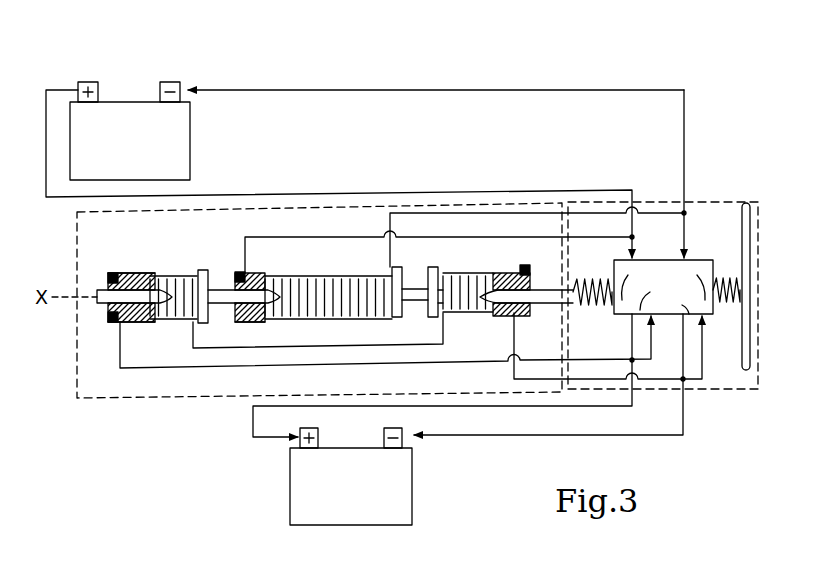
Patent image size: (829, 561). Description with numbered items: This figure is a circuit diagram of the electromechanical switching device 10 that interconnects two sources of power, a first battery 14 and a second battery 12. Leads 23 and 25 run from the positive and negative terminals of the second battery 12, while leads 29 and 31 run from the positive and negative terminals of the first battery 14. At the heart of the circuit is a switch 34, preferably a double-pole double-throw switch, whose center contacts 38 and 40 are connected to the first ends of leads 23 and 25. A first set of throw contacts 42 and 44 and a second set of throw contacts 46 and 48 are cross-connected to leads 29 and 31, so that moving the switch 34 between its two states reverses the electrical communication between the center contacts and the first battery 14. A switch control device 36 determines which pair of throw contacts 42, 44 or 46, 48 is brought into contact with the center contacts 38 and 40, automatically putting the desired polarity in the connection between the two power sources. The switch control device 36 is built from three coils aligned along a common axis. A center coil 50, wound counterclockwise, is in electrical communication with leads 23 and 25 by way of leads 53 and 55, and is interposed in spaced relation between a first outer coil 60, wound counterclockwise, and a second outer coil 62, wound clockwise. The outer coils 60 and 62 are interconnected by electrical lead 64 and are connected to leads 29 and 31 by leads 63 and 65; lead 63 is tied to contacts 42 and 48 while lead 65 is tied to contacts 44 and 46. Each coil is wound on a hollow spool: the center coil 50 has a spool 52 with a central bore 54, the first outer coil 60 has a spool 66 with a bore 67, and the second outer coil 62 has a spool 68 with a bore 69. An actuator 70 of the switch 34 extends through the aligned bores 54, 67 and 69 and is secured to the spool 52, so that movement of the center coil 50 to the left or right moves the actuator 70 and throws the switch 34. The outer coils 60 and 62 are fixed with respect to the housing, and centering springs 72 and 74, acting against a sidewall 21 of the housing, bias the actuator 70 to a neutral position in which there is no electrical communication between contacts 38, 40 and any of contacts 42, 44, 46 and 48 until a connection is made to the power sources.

The electromechanical switching device 10 is at (588, 70).
The second battery 12 is at (175, 141).
The first battery 14 is at (400, 489).
The sidewall 21 is at (750, 334).
The lead 23 is at (290, 190).
The lead 25 is at (342, 91).
The lead 29 is at (443, 407).
The lead 31 is at (581, 363).
The switch 34 is at (700, 205).
The switch control device 36 is at (87, 233).
The center contact 38 is at (640, 258).
The center contact 40 is at (692, 258).
The throw contact 42 is at (638, 283).
The throw contact 44 is at (674, 305).
The throw contact 46 is at (690, 283).
The throw contact 48 is at (658, 295).
The center coil 50 is at (313, 273).
The spool 52 is at (224, 267).
The lead 53 is at (290, 237).
The central bore 54 is at (230, 287).
The lead 55 is at (388, 250).
The first outer coil 60 is at (106, 277).
The second outer coil 62 is at (455, 272).
The lead 63 is at (170, 370).
The electrical lead 64 is at (278, 345).
The lead 65 is at (510, 332).
The spool 66 is at (120, 273).
The bore 67 is at (108, 310).
The spool 68 is at (440, 267).
The bore 69 is at (530, 275).
The actuator 70 is at (415, 298).
The centering spring 72 is at (603, 300).
The centering spring 74 is at (722, 302).